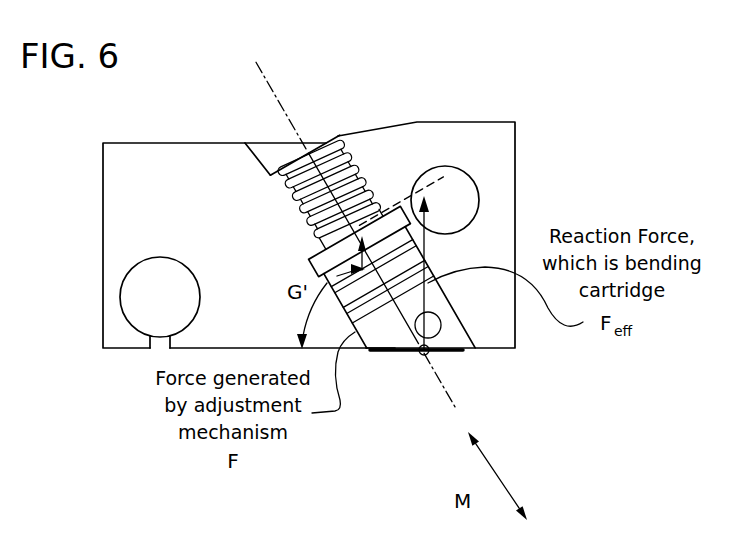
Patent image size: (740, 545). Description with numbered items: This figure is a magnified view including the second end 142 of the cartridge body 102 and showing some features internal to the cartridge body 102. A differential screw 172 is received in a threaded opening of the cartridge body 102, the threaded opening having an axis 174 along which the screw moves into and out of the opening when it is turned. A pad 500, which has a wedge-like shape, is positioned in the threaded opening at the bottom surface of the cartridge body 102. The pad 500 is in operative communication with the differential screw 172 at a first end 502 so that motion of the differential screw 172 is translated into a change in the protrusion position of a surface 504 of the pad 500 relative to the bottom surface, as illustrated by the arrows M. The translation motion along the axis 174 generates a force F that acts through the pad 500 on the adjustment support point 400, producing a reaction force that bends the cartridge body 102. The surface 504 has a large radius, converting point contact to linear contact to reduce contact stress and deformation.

The cartridge body 102 is at (200, 195).
The axis 174 is at (280, 107).
The differential screw 172 is at (338, 148).
The first end 502 is at (317, 256).
The pad 500 is at (378, 353).
The surface 504 is at (398, 366).
The adjustment support point 400 is at (430, 355).
The second end 142 is at (590, 392).